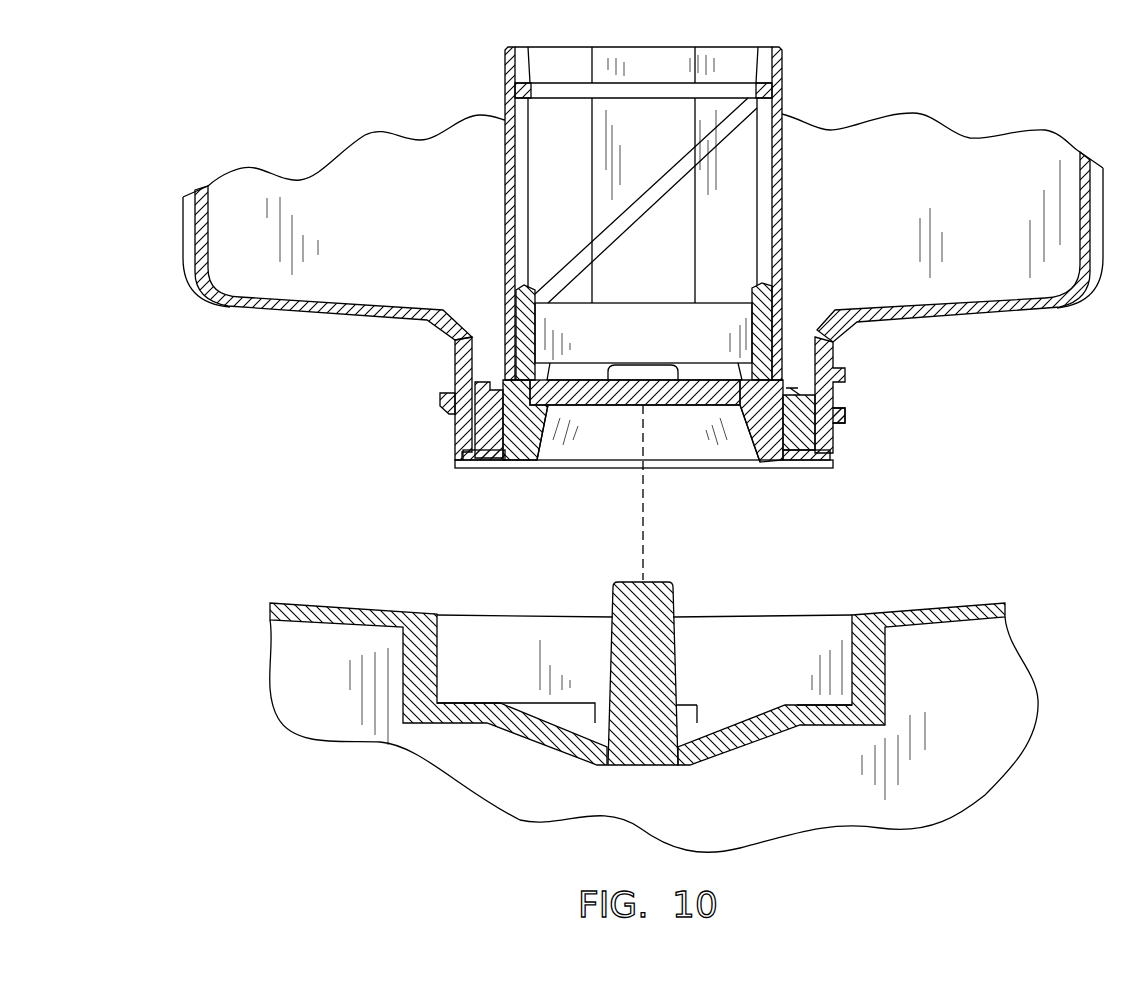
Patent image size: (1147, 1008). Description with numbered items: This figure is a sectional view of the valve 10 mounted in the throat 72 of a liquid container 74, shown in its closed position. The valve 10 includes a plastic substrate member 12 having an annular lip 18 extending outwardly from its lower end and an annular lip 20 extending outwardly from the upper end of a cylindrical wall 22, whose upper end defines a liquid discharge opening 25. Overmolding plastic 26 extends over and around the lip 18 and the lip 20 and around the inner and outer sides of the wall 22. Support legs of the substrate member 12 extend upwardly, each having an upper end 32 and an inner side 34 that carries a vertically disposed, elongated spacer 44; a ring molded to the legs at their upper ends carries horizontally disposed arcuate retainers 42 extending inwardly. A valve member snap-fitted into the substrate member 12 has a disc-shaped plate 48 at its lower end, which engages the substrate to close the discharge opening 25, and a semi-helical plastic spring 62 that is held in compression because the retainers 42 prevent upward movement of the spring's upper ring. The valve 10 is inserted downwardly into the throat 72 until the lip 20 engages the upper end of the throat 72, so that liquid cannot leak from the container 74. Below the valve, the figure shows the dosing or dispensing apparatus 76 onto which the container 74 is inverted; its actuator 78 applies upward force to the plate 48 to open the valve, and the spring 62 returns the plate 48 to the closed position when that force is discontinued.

The valve 10 is at (802, 45).
The plastic substrate member 12 is at (790, 242).
The annular lip 18 is at (798, 458).
The annular lip 20 is at (846, 384).
The cylindrical wall 22 is at (540, 455).
The liquid discharge opening 25 is at (683, 443).
The overmolding plastic 26 is at (828, 428).
The upper end of support leg 32 is at (505, 45).
The inner side of support leg 34 is at (503, 383).
The arcuate retainers 42 is at (530, 68).
The spacer 44 is at (765, 186).
The disc-shaped plate 48 is at (942, 242).
The semi-helical plastic spring 62 is at (720, 147).
The throat 72 is at (460, 378).
The container 74 is at (303, 330).
The dosing or dispensing apparatus 76 is at (949, 596).
The actuator 78 is at (645, 625).